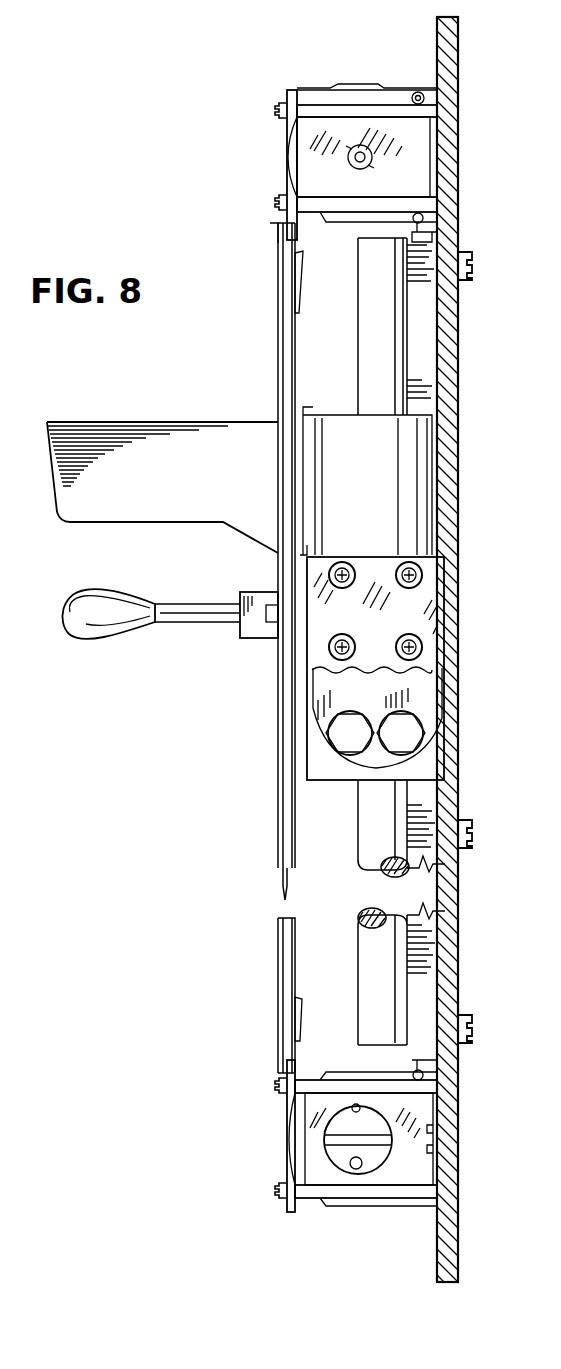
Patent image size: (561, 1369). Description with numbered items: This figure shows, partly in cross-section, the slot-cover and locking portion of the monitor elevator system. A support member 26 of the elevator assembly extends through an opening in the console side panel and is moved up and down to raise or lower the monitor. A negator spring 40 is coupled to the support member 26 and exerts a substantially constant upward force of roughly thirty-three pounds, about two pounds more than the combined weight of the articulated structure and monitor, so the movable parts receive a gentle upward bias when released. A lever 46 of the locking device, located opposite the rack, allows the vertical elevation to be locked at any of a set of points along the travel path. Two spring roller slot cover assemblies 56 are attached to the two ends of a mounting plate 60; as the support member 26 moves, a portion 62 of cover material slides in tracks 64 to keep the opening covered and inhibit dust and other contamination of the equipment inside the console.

The support member 26 is at (102, 422).
The negator spring 40 is at (432, 748).
The lever 46 is at (90, 648).
The spring roller slot cover assembly 56 is at (310, 143).
The mounting plate 60 is at (458, 150).
The portion of cover material 62 is at (282, 888).
The tracks 64 is at (278, 965).